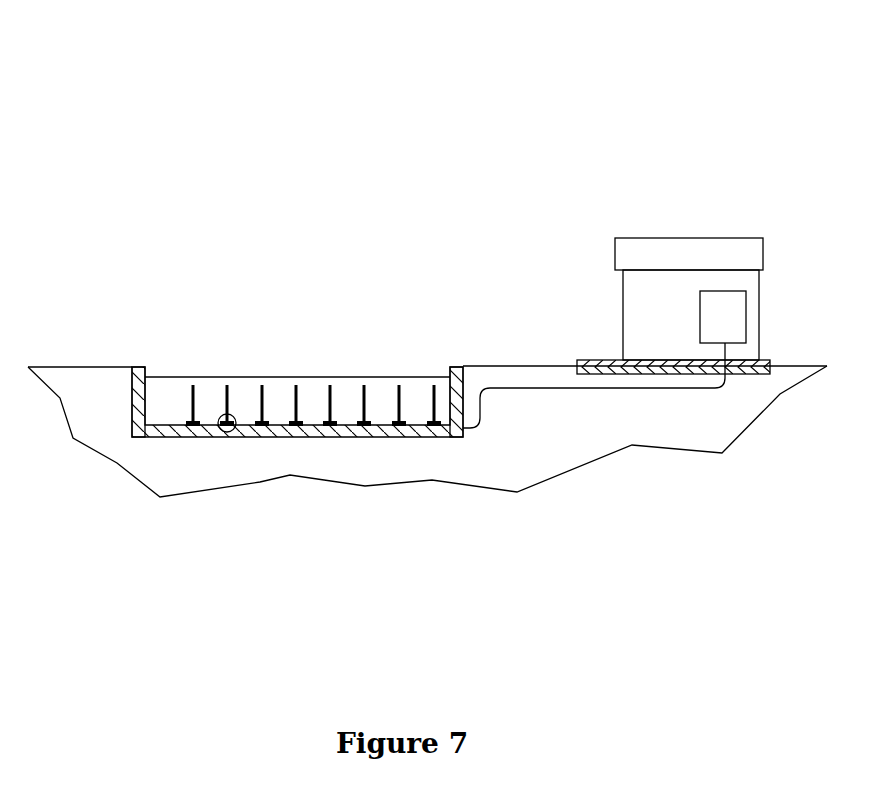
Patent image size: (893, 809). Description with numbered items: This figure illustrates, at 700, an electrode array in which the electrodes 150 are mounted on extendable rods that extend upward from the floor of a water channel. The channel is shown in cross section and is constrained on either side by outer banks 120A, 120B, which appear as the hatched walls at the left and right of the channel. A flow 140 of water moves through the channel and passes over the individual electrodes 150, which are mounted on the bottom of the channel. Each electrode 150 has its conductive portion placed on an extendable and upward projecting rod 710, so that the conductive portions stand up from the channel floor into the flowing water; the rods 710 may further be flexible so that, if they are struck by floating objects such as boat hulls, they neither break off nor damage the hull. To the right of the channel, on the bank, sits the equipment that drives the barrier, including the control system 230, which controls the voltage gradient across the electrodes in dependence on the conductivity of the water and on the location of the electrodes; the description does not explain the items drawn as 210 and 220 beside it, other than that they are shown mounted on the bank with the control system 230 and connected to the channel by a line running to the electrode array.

The electrode array on extendable rods 700 is at (360, 220).
The outer bank 120A is at (136, 367).
The outer bank 120B is at (456, 367).
The flow of water 140 is at (352, 377).
The electrode 150 is at (228, 414).
The extendable and upward projecting rod 710 is at (435, 382).
The pump 210 is at (733, 243).
The pump base 220 is at (757, 362).
The control system 230 is at (733, 291).